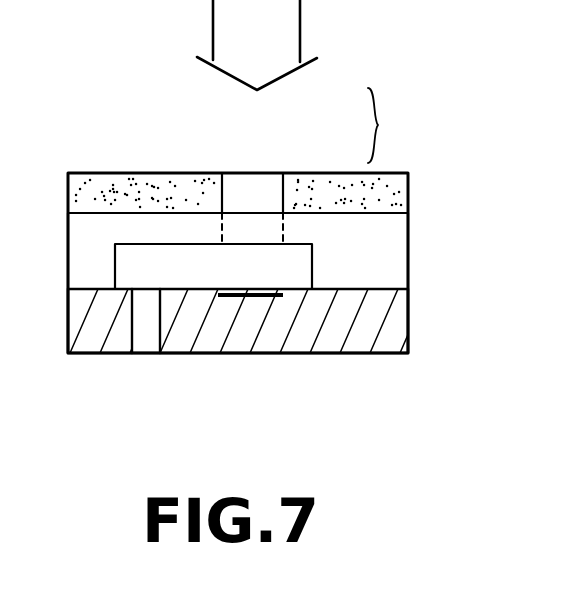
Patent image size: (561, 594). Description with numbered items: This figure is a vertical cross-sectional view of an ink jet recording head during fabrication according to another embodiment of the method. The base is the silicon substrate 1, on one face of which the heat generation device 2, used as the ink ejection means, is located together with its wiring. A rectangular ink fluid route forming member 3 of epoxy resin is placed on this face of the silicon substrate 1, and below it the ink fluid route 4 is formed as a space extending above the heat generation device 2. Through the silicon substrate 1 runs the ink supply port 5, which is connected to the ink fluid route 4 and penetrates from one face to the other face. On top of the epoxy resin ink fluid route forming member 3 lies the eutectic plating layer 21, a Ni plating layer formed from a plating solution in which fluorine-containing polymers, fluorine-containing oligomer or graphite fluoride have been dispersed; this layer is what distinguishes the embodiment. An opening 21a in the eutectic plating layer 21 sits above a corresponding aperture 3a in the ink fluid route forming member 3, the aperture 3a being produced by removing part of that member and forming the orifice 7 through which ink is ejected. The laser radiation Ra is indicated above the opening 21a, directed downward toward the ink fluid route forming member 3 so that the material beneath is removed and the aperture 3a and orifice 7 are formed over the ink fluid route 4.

The radiation / light beam Ra is at (300, 46).
The eutectic plating layer 21 is at (403, 192).
The opening in light shielding layer 21a is at (262, 185).
The aperture 3a is at (282, 232).
The orifice 7 is at (384, 125).
The ink fluid route forming member 3 is at (408, 250).
The ink fluid route 4 is at (300, 277).
The silicon substrate 1 is at (370, 340).
The ink supply port 5 is at (147, 340).
The heat generation device 2 is at (243, 297).